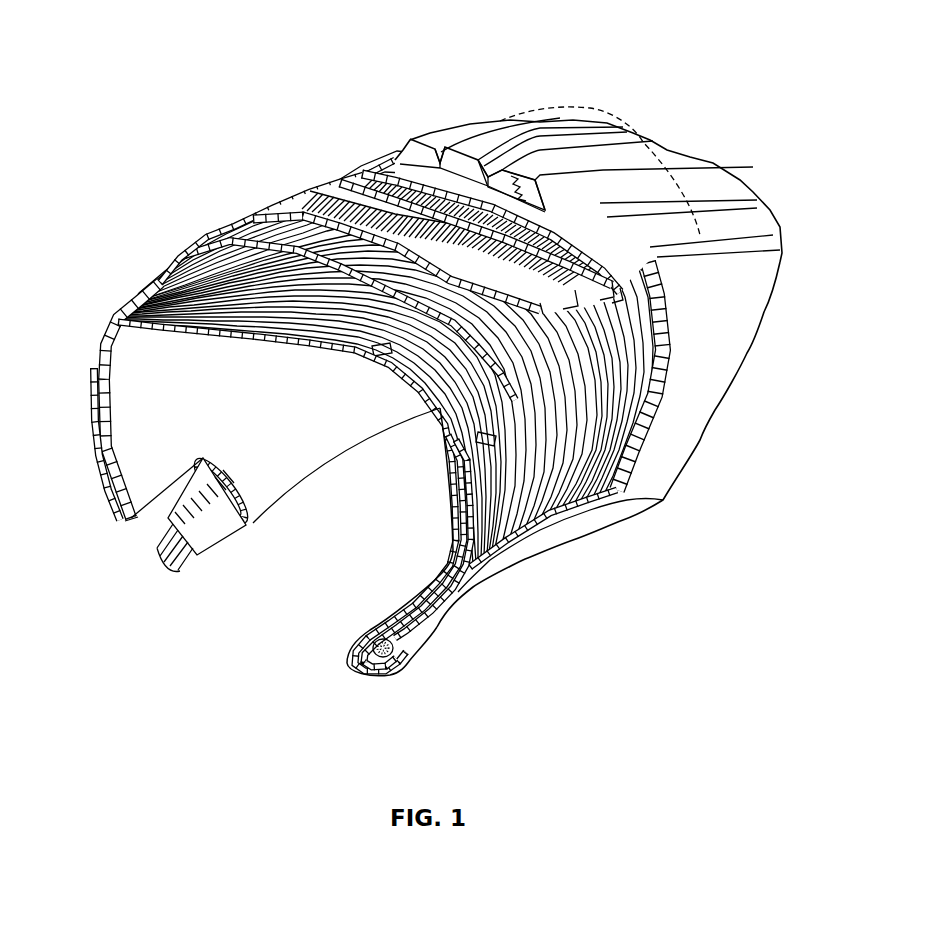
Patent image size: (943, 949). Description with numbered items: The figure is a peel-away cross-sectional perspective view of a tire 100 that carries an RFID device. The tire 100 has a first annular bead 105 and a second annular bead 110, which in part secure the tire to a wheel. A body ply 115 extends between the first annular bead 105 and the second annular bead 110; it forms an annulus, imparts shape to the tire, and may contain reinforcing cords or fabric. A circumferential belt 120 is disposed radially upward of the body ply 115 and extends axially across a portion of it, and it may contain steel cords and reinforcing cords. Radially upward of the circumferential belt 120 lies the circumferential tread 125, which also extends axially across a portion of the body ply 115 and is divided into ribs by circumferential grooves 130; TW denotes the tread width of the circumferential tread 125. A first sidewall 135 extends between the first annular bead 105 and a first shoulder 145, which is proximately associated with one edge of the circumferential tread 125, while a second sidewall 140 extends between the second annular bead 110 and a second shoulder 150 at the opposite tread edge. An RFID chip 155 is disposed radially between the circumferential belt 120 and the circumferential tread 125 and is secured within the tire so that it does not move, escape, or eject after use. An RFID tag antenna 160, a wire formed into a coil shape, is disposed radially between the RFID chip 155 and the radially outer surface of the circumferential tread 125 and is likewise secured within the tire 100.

The tire 100 is at (157, 46).
The first annular bead 105 is at (205, 530).
The second annular bead 110 is at (403, 658).
The body ply 115 is at (452, 485).
The circumferential belt 120 is at (275, 214).
The circumferential tread 125 is at (401, 139).
The circumferential grooves 130 is at (436, 158).
The first sidewall 135 is at (98, 490).
The second sidewall 140 is at (757, 336).
The first shoulder 145 is at (108, 312).
The second shoulder 150 is at (772, 268).
The RFID chip 155 is at (483, 178).
The RFID tag antenna 160 is at (522, 176).
The tread width TW is at (582, 108).